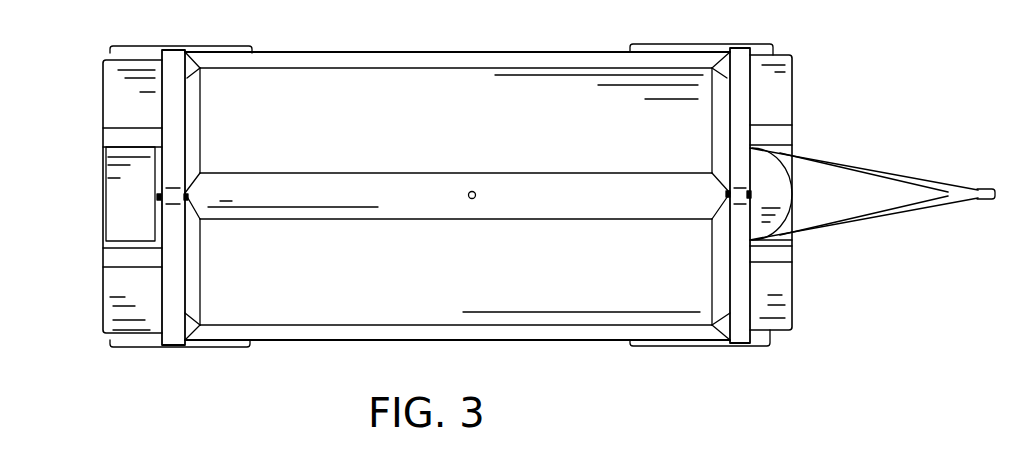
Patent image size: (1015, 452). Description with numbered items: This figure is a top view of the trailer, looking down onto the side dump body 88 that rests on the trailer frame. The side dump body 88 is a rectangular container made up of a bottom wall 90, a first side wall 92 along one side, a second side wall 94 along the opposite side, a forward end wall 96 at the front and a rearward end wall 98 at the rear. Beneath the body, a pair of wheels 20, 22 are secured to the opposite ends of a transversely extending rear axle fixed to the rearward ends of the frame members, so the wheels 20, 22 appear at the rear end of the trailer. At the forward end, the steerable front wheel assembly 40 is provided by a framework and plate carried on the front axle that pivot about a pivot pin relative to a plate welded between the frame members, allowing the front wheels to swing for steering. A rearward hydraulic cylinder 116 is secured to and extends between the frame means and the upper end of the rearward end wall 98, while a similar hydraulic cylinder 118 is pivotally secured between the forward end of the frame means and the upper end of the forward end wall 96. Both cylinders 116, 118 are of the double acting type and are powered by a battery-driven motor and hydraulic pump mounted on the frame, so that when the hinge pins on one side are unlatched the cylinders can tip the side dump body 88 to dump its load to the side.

The wheel 20 is at (200, 50).
The wheel 22 is at (205, 348).
The steerable front wheel assembly 40 is at (903, 158).
The side dump body 88 is at (597, 46).
The bottom wall 90 is at (544, 209).
The first side wall 92 is at (513, 137).
The second side wall 94 is at (513, 288).
The forward end wall 96 is at (722, 127).
The rearward end wall 98 is at (190, 128).
The rearward hydraulic cylinder 116 is at (160, 197).
The hydraulic cylinder 118 is at (745, 196).